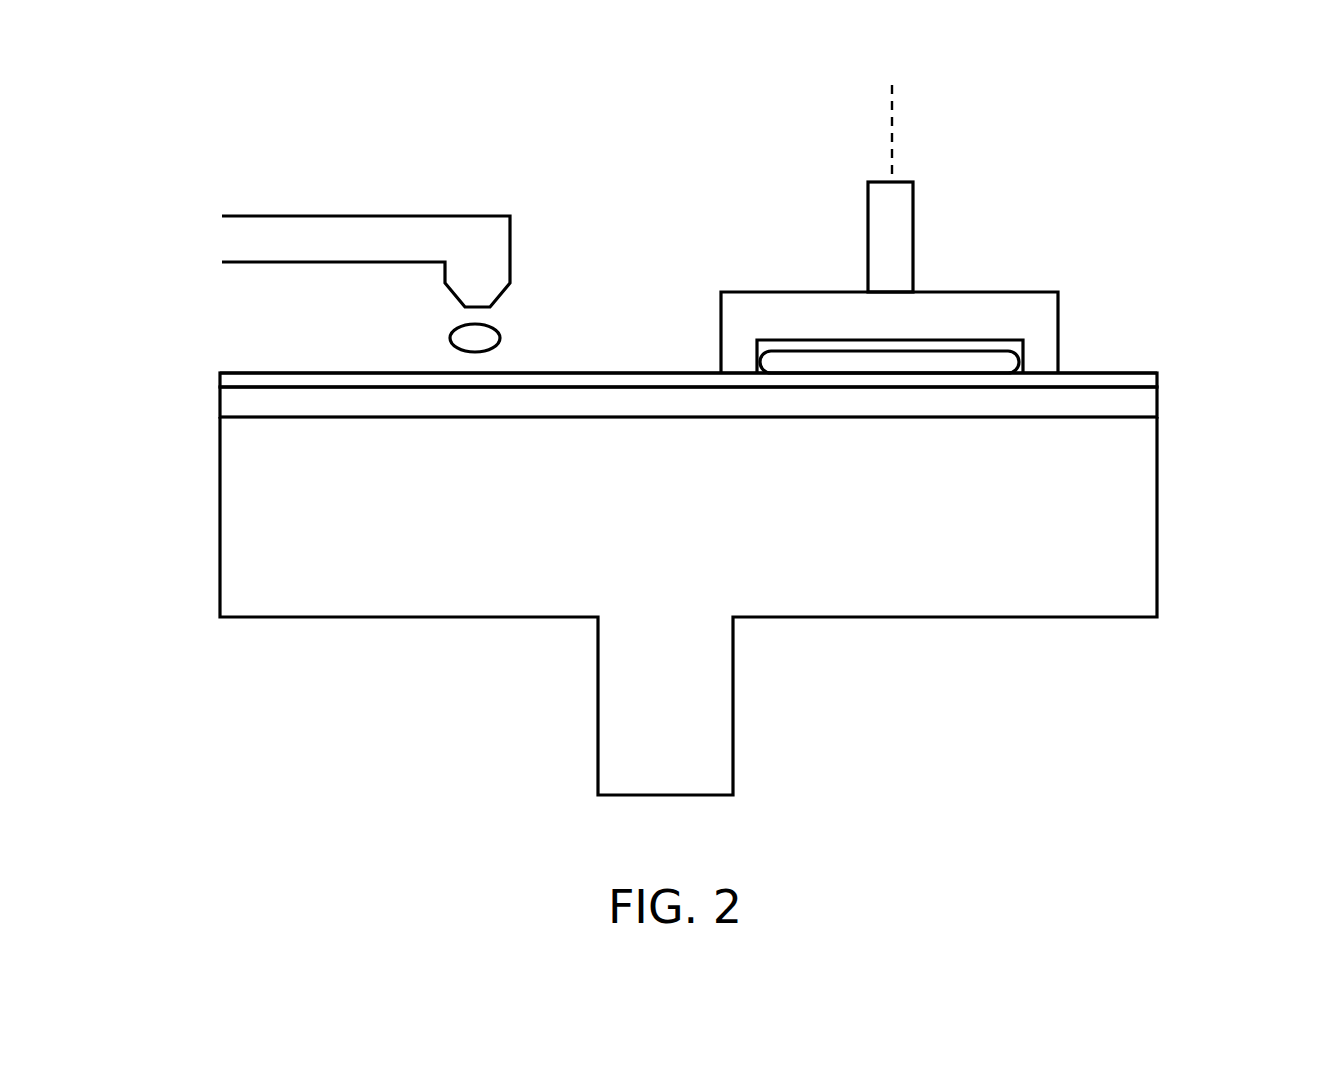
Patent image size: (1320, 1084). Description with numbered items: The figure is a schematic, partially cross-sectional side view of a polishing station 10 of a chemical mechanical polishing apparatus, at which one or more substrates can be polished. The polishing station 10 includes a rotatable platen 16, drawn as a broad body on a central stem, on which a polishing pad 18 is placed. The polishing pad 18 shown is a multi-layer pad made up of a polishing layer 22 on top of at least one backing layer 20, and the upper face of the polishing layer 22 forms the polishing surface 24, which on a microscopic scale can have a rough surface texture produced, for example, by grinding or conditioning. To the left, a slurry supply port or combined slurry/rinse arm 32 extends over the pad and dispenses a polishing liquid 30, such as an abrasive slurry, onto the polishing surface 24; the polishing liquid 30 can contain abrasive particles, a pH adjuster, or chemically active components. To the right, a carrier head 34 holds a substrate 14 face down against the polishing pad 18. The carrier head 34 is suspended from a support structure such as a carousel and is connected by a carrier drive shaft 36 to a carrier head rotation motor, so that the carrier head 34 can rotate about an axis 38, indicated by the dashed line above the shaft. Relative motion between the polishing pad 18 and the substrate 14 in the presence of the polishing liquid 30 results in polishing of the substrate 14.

The polishing station 10 is at (378, 173).
The substrate 14 is at (950, 351).
The rotatable platen 16 is at (1157, 510).
The polishing pad 18 is at (694, 352).
The backing layer 20 is at (1157, 404).
The polishing layer 22 is at (1160, 380).
The polishing surface 24 is at (575, 374).
The polishing liquid 30 is at (500, 337).
The slurry/rinse arm 32 is at (455, 216).
The carrier head 34 is at (1025, 292).
The carrier drive shaft 36 is at (868, 249).
The axis 38 is at (892, 140).